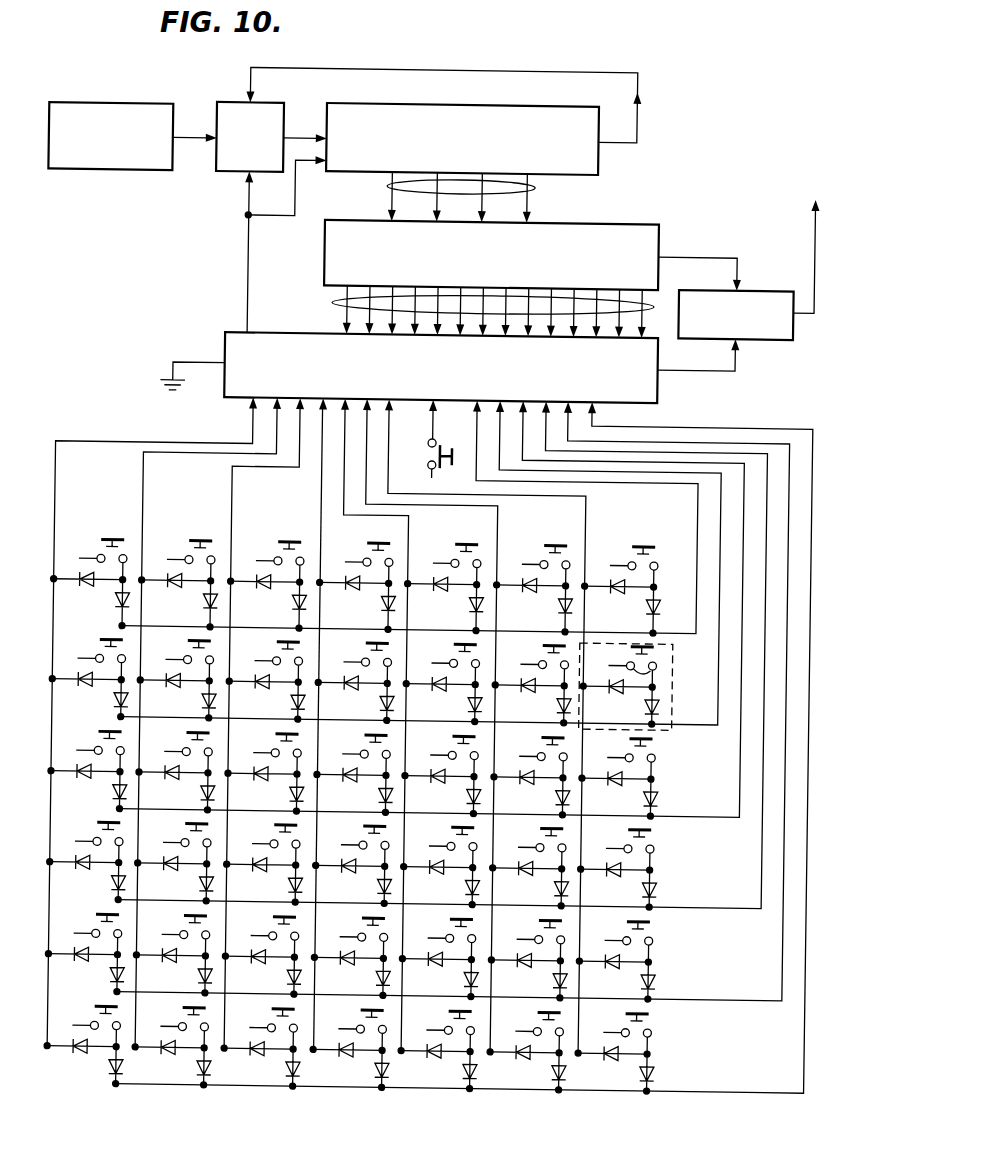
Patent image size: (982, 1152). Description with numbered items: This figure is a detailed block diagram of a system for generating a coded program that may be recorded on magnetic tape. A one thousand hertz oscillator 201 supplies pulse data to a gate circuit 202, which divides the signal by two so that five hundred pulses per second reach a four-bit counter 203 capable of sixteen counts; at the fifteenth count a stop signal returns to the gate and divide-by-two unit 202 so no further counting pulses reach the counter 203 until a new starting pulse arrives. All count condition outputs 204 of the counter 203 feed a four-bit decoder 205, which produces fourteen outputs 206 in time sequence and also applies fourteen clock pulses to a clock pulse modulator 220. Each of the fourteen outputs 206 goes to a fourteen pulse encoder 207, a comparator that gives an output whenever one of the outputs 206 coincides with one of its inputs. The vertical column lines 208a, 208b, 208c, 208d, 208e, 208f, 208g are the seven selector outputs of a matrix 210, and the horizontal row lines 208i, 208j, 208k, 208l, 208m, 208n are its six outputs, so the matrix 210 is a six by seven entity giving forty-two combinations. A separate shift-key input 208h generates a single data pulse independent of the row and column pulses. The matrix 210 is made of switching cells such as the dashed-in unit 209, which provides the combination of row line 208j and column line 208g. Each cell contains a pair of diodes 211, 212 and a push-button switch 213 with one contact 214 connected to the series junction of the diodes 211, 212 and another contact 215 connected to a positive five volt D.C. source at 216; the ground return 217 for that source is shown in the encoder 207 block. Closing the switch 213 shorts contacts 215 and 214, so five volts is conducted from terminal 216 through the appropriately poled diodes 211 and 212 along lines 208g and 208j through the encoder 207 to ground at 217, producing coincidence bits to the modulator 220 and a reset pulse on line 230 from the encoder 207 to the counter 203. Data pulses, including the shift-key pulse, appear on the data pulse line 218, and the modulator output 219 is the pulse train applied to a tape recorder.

The 1,000 HZ oscillator 201 is at (115, 172).
The gate circuit 202 is at (233, 102).
The 4-bit counter 203 is at (468, 105).
The count condition outputs 204 is at (535, 189).
The 4-bit decoder 205 is at (607, 221).
The decoder outputs 206 is at (345, 302).
The 14 pulse encoder 207 is at (313, 333).
The vertical column input line 208a is at (143, 442).
The vertical column input line 208b is at (165, 453).
The vertical column input line 208c is at (245, 467).
The vertical column input line 208d is at (319, 458).
The vertical column input line 208e is at (336, 455).
The vertical column input line 208f is at (358, 445).
The vertical column input line 208g is at (381, 440).
The shift-key input 208h is at (436, 418).
The horizontal row input line 208i is at (562, 392).
The horizontal row input line 208j is at (501, 420).
The horizontal row input line 208k is at (523, 420).
The horizontal row input line 208l is at (690, 912).
The horizontal row input line 208m is at (586, 410).
The horizontal row input line 208n is at (625, 431).
The switching cell 209 is at (669, 745).
The matrix 210 is at (44, 694).
The diode 211 is at (612, 690).
The diode 212 is at (662, 700).
The push-button switch 213 is at (657, 643).
The switch contact 214 is at (662, 660).
The switch contact 215 is at (660, 672).
The five volt D.C. source terminal 216 is at (605, 665).
The ground return 217 is at (195, 362).
The data pulse line 218 is at (710, 370).
The modulator output 219 is at (814, 272).
The clock pulse modulator 220 is at (793, 322).
The reset line 230 is at (247, 252).